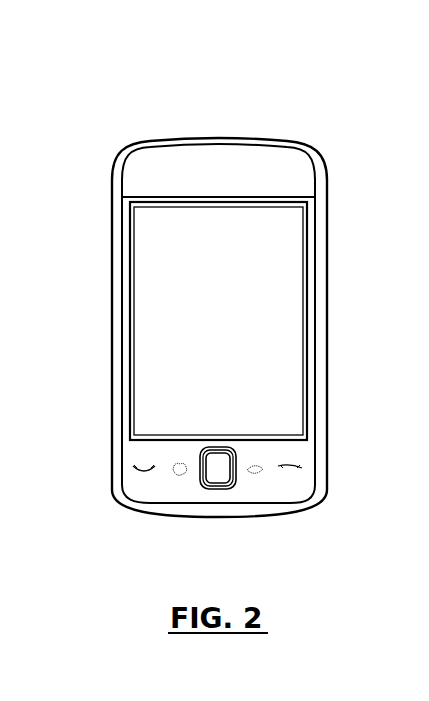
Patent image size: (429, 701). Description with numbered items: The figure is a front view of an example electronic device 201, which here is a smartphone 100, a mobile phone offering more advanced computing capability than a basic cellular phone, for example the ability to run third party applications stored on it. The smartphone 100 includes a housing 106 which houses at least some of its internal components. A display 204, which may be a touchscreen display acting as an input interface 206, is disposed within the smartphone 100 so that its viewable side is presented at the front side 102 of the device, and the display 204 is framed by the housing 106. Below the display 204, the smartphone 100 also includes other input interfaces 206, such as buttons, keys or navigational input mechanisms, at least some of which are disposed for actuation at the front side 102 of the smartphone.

The smartphone 100 is at (195, 80).
The electronic device 201 is at (148, 106).
The housing 106 is at (330, 219).
The display 204 is at (130, 274).
The input interfaces 206 is at (128, 340).
The front side 102 is at (128, 451).